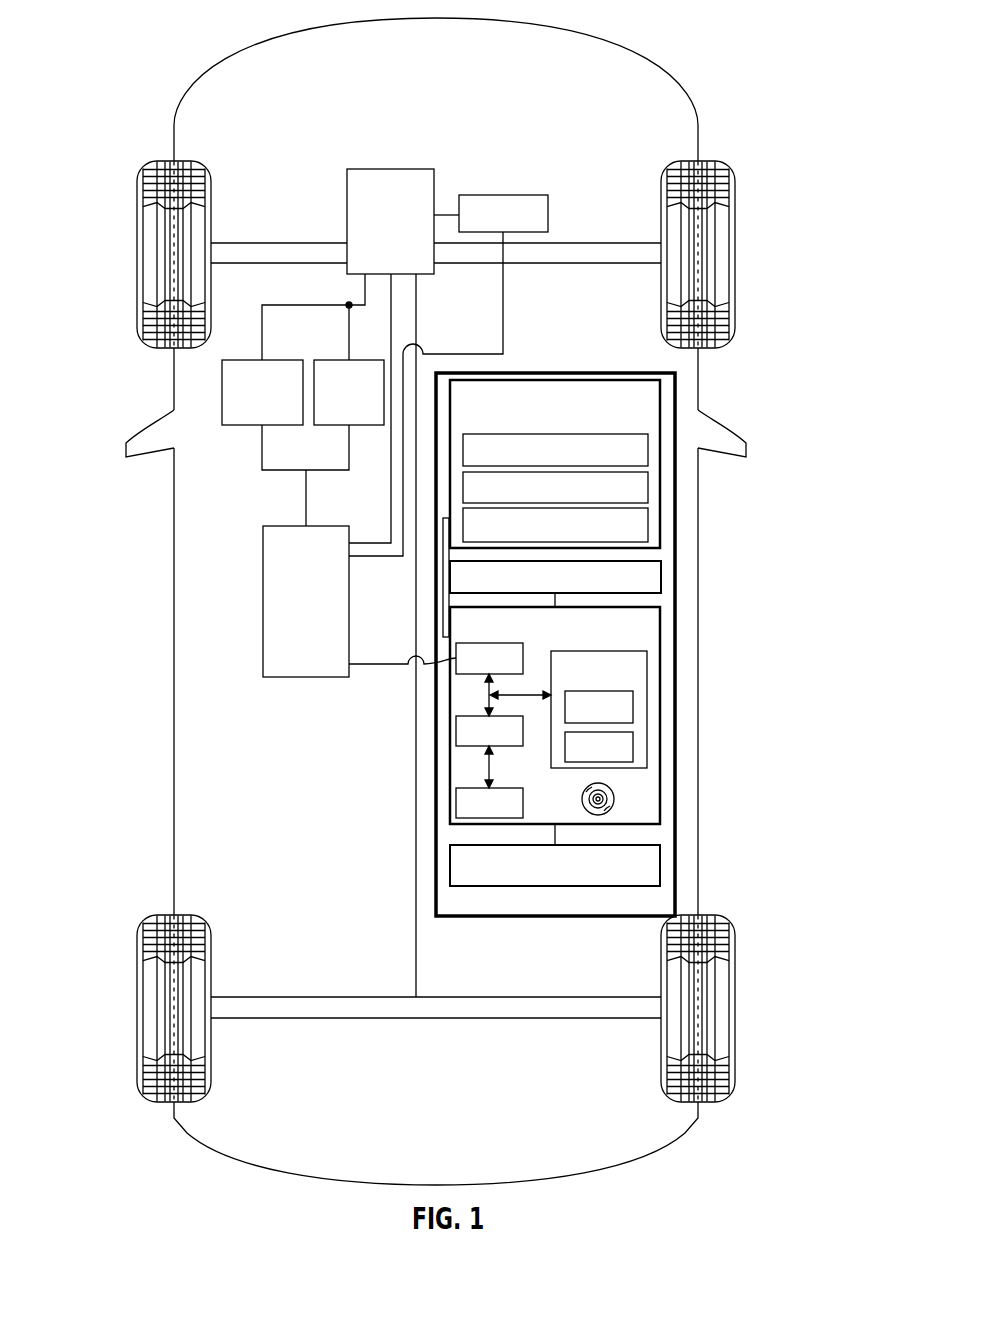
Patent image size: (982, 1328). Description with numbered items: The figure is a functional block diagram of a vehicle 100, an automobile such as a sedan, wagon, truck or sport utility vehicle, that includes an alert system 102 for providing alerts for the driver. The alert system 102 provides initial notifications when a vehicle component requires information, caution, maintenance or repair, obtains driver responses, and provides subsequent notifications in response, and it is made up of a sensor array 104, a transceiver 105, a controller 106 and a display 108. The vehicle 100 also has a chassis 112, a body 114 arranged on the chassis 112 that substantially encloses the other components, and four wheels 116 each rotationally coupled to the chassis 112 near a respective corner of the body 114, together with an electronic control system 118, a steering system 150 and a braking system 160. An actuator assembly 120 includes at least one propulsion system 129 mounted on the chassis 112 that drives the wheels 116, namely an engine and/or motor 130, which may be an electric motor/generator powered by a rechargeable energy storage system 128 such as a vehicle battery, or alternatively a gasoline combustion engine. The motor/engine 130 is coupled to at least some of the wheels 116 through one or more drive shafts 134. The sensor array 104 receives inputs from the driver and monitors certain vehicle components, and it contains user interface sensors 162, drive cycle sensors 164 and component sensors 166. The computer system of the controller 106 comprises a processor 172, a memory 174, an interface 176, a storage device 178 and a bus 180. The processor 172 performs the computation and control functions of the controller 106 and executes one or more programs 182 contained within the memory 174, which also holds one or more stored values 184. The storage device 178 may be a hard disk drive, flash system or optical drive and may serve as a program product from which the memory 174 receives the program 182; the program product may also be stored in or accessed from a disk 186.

The vehicle 100 is at (712, 48).
The alert system 102 is at (675, 383).
The sensor array 104 is at (640, 392).
The transceiver 105 is at (661, 577).
The controller 106 is at (660, 617).
The display 108 is at (660, 871).
The chassis 112 is at (414, 948).
The body 114 is at (174, 680).
The wheels 116 is at (137, 257).
The electronic control system 118 is at (263, 603).
The actuator assembly 120 is at (427, 276).
The rechargeable energy storage system 128 is at (521, 227).
The propulsion system 129 is at (373, 168).
The engine and/or motor 130 is at (407, 216).
The drive shafts 134 is at (268, 242).
The steering system 150 is at (278, 404).
The braking system 160 is at (366, 404).
The user interface sensors 162 is at (648, 452).
The drive cycle sensors 164 is at (648, 490).
The component sensors 166 is at (648, 523).
The processor 172 is at (433, 663).
The memory 174 is at (647, 665).
The interface 176 is at (456, 730).
The storage device 178 is at (456, 802).
The bus 180 is at (490, 689).
The program 182 is at (633, 706).
The stored values 184 is at (633, 747).
The disk 186 is at (615, 798).